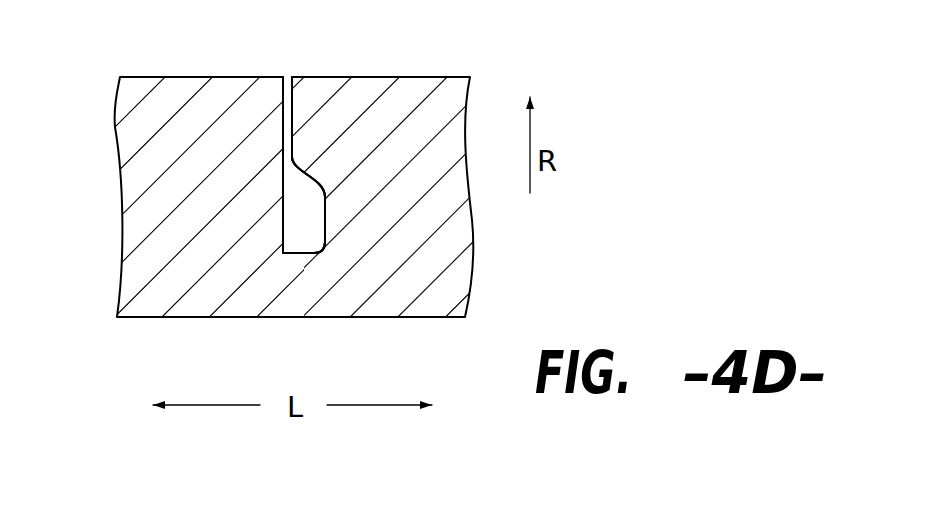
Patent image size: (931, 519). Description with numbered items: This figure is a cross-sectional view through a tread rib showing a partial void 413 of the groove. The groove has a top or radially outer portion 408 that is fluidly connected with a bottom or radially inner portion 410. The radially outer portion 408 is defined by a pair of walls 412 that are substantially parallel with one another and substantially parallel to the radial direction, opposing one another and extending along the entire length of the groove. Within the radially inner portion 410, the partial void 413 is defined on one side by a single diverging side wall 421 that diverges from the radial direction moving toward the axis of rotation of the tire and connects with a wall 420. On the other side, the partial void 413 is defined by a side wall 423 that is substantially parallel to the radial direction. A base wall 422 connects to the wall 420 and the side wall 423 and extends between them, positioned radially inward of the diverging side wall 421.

The radially inner portion 410 is at (337, 175).
The walls 412 is at (282, 101).
The radially outer portion 408 is at (298, 135).
The diverging side wall 421 is at (314, 172).
The wall 420 is at (329, 210).
The base wall 422 is at (300, 254).
The side wall 423 is at (280, 227).
The partial void 413 is at (285, 192).